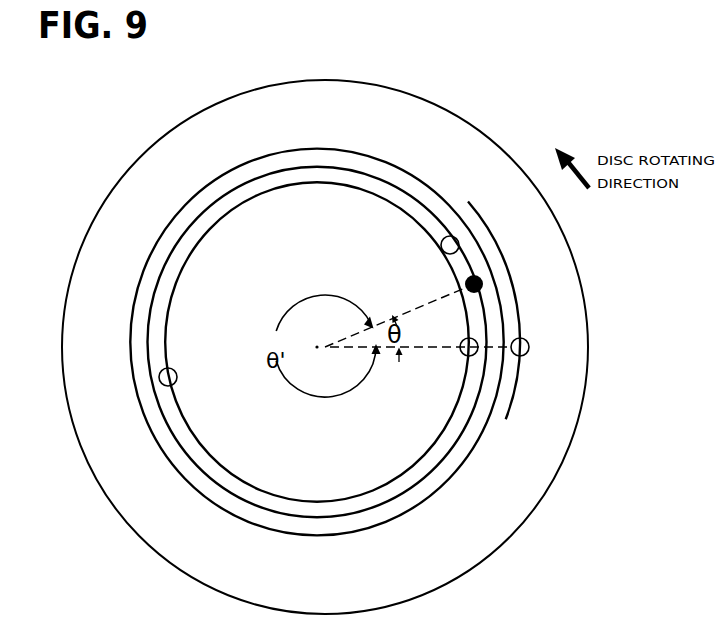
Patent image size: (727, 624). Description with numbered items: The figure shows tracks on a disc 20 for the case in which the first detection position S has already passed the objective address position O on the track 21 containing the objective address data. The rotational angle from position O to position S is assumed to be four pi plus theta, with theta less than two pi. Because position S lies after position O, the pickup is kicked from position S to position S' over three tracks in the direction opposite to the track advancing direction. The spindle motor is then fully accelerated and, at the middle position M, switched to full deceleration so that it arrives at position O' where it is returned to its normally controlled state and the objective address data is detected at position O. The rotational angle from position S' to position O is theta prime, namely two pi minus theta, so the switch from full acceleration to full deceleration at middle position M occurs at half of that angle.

The disc 20 is at (435, 104).
The track 21 is at (330, 148).
The objective address data existing position O is at (541, 285).
The position where normal control is recovered O' is at (525, 236).
The first detection position S is at (571, 367).
The kicked pickup position S' is at (445, 367).
The middle position M is at (159, 381).